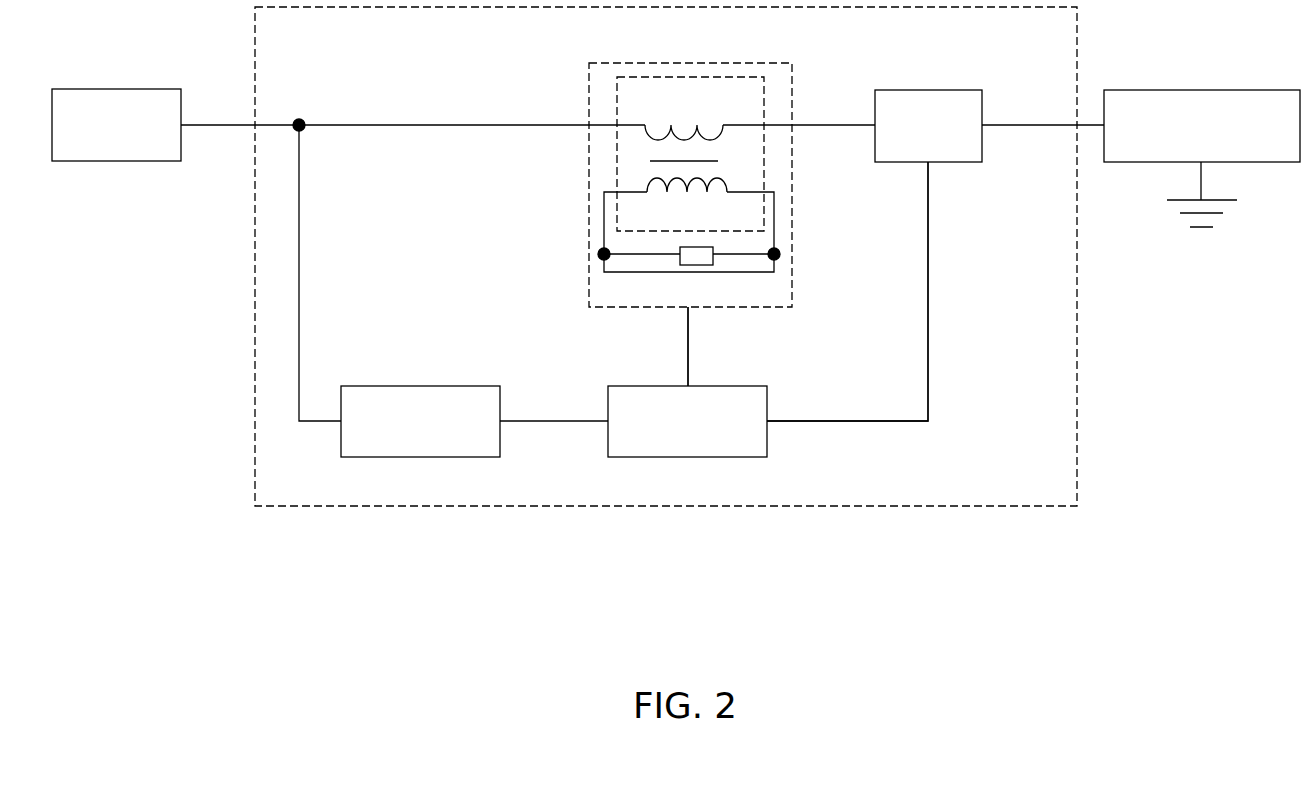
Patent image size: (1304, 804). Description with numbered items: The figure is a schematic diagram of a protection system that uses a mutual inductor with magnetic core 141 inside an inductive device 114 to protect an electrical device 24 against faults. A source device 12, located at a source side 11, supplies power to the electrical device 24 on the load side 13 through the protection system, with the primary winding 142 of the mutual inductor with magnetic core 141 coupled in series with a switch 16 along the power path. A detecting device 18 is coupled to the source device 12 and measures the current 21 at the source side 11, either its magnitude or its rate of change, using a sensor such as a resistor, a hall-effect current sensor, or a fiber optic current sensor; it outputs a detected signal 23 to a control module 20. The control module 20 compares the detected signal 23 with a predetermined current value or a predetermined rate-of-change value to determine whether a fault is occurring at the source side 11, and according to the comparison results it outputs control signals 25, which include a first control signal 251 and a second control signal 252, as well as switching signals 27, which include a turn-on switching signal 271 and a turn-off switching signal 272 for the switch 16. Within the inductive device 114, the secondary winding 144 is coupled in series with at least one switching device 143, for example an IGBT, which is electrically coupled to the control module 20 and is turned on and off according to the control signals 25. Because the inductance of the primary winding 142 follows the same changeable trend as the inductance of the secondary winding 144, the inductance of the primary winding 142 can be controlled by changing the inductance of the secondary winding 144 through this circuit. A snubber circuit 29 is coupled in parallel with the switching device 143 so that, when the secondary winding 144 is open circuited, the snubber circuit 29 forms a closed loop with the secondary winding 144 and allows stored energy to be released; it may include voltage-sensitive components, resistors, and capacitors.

The source side 11 is at (247, 182).
The source device 12 is at (103, 98).
The load side 13 is at (1147, 183).
The switch 16 is at (912, 104).
The detecting device 18 is at (463, 450).
The control module 20 is at (742, 445).
The current 21 is at (300, 240).
The detected signal 23 is at (552, 420).
The electrical device 24 is at (1192, 108).
The control signals 25 is at (688, 363).
The first control signal 251 is at (765, 357).
The second control signal 252 is at (765, 357).
The switching signals 27 is at (930, 314).
The turn-on switching signal 271 is at (1006, 297).
The turn-off switching signal 272 is at (1006, 297).
The snubber circuit 29 is at (708, 258).
The inductive device 114 is at (588, 190).
The mutual inductor with magnetic core 141 is at (680, 78).
The primary winding 142 is at (688, 127).
The switching device 143 is at (706, 271).
The secondary winding 144 is at (679, 183).